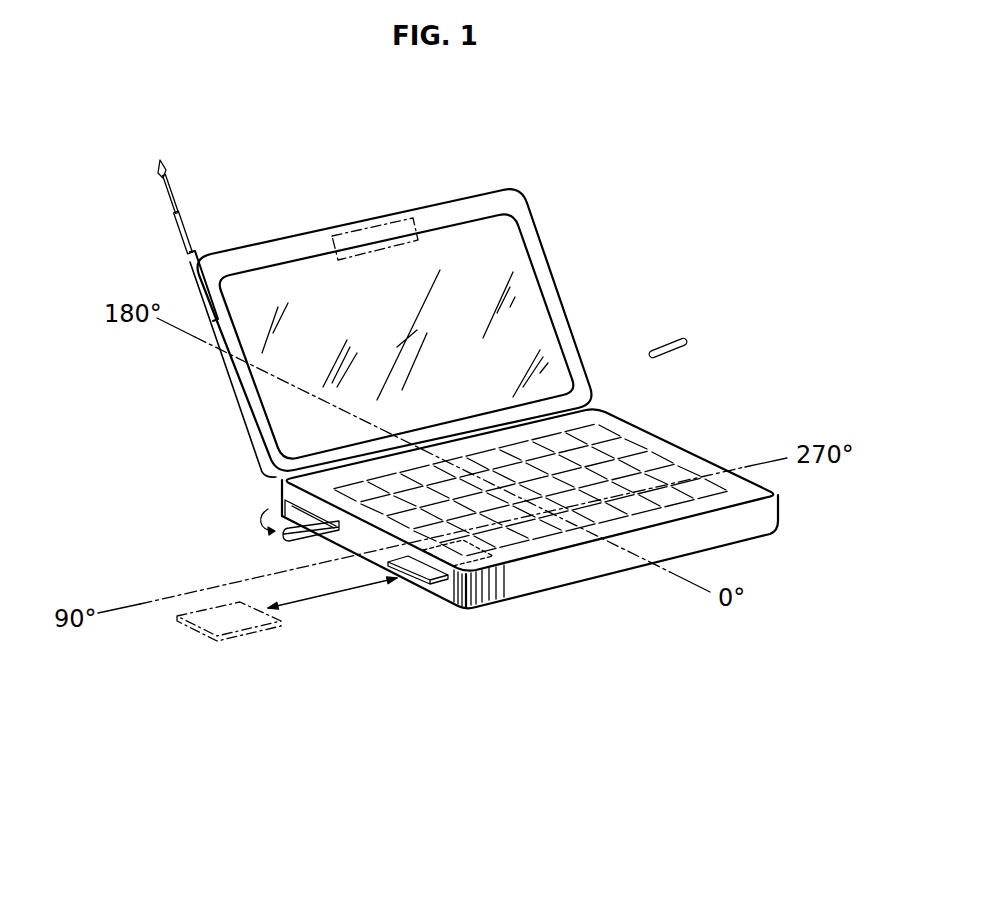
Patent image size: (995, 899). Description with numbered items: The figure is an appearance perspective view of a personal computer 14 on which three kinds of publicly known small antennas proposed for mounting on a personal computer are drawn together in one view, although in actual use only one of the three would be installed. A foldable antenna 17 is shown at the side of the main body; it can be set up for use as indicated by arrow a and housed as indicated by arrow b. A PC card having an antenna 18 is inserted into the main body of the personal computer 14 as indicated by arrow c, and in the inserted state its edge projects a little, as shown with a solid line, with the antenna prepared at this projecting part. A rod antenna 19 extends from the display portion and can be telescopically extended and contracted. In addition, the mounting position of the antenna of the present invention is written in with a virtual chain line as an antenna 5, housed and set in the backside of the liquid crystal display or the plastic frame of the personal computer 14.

The antenna 5 is at (417, 223).
The personal computer 14 is at (605, 390).
The foldable antenna 17 is at (273, 556).
The PC card having an antenna 18 is at (410, 588).
The rod antenna 19 is at (183, 221).